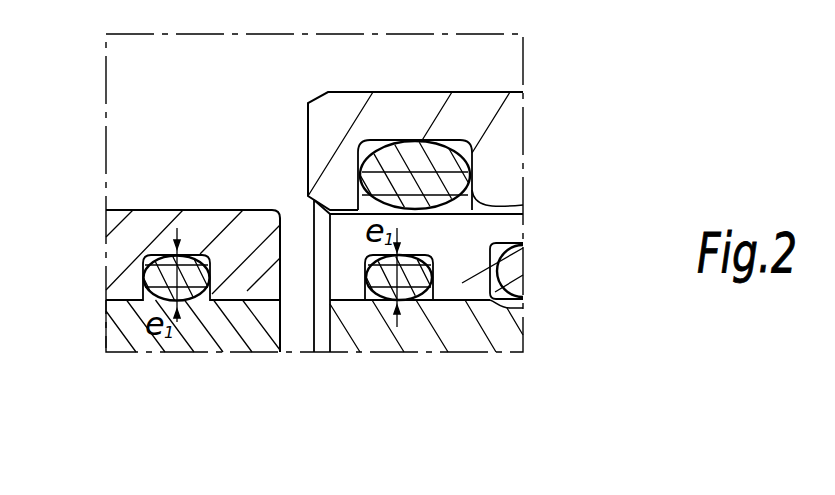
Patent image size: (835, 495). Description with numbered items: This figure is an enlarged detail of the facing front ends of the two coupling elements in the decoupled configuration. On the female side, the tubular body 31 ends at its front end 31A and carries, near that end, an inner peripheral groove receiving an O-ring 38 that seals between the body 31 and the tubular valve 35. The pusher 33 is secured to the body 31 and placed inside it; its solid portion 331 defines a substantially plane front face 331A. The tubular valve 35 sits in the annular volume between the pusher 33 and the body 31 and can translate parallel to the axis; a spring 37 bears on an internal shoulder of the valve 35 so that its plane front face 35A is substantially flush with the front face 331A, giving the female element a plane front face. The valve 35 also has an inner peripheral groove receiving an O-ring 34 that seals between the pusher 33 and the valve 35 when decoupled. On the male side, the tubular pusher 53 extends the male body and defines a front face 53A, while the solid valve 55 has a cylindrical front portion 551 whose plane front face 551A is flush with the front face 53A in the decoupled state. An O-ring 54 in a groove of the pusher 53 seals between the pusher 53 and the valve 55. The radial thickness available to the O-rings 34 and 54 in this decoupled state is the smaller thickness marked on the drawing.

The tubular body 31 is at (433, 115).
The front end 31A is at (307, 134).
The O-ring 38 is at (437, 168).
The O-ring 34 is at (417, 270).
The spring 37 is at (527, 273).
The pusher 33 is at (513, 334).
The solid portion 331 is at (400, 335).
The front face 331A is at (330, 342).
The tubular valve 35 is at (475, 303).
The front face 35A is at (330, 224).
The pusher 53 is at (208, 228).
The front face 53A is at (281, 262).
The O-ring 54 is at (171, 270).
The valve 55 is at (128, 338).
The cylindrical front portion 551 is at (213, 337).
The front face 551A is at (279, 343).